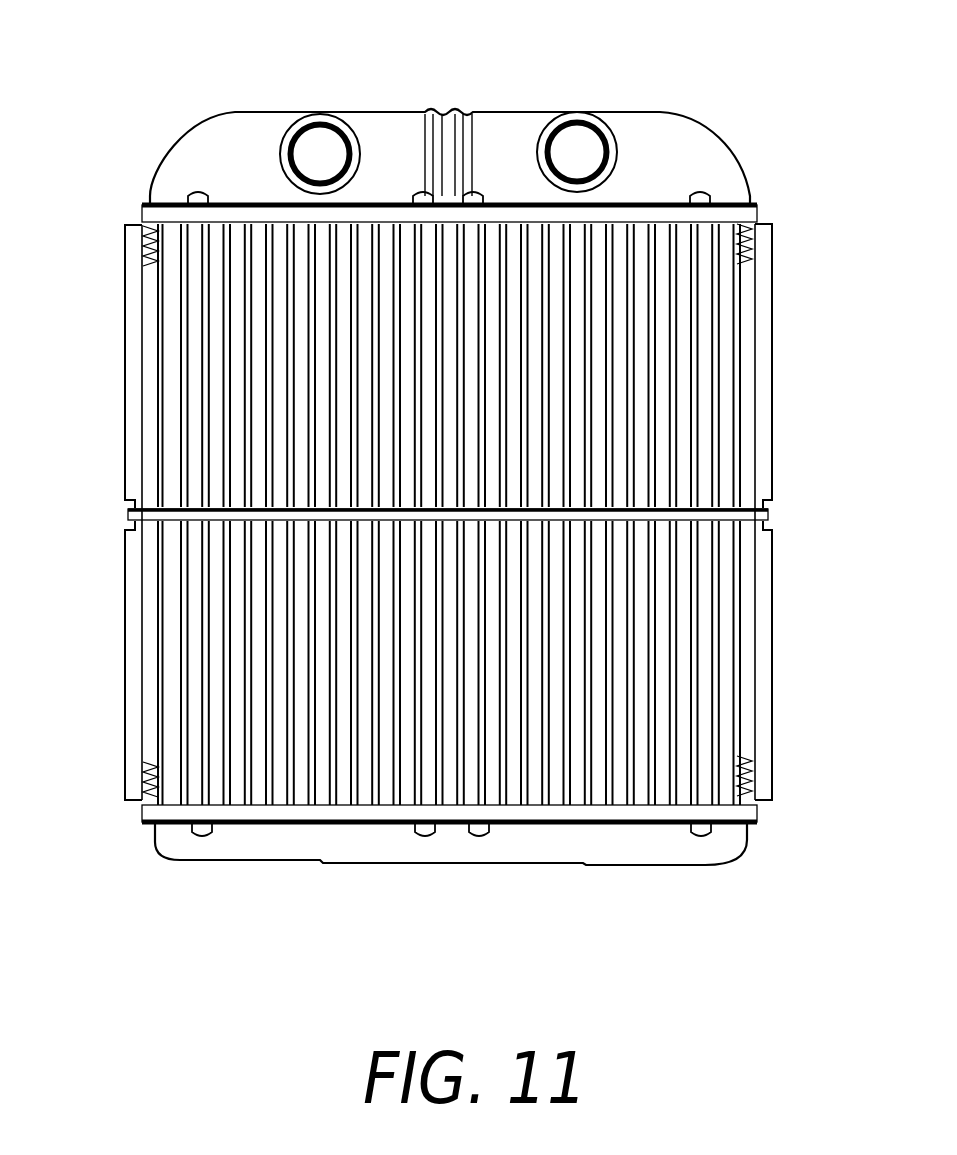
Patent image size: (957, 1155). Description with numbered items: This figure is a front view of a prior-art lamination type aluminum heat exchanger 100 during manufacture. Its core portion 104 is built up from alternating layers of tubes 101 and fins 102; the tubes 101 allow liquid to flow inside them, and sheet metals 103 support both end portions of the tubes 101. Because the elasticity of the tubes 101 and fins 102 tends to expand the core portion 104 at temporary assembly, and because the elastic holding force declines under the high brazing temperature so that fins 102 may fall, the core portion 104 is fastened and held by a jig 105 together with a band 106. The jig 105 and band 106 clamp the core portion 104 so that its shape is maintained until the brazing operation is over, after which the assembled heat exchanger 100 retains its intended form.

The heat exchanger 100 is at (188, 117).
The tube 101 is at (735, 680).
The fin 102 is at (745, 757).
The sheet metal 103 is at (523, 214).
The core portion 104 is at (769, 214).
The jig 105 is at (757, 348).
The band 106 is at (682, 512).